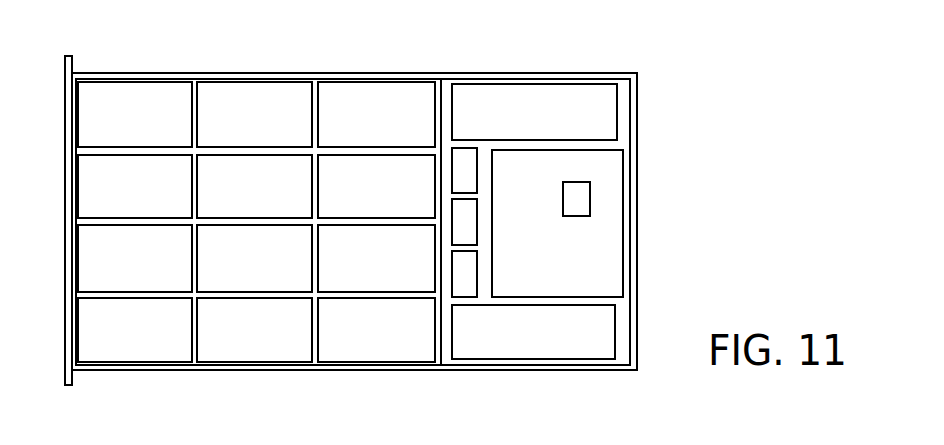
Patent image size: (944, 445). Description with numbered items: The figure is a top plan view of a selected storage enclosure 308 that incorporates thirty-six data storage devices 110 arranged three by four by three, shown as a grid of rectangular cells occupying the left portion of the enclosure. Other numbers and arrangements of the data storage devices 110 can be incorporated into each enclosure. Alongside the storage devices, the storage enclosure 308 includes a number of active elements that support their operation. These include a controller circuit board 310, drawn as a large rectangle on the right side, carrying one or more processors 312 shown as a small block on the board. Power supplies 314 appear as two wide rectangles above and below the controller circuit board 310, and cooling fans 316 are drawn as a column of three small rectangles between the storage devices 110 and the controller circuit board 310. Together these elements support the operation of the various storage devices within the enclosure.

The storage enclosure 308 is at (772, 100).
The data storage devices 110 is at (256, 95).
The power supplies 314 is at (552, 95).
The cooling fans 316 is at (462, 160).
The controller circuit board 310 is at (592, 250).
The processors 312 is at (590, 200).